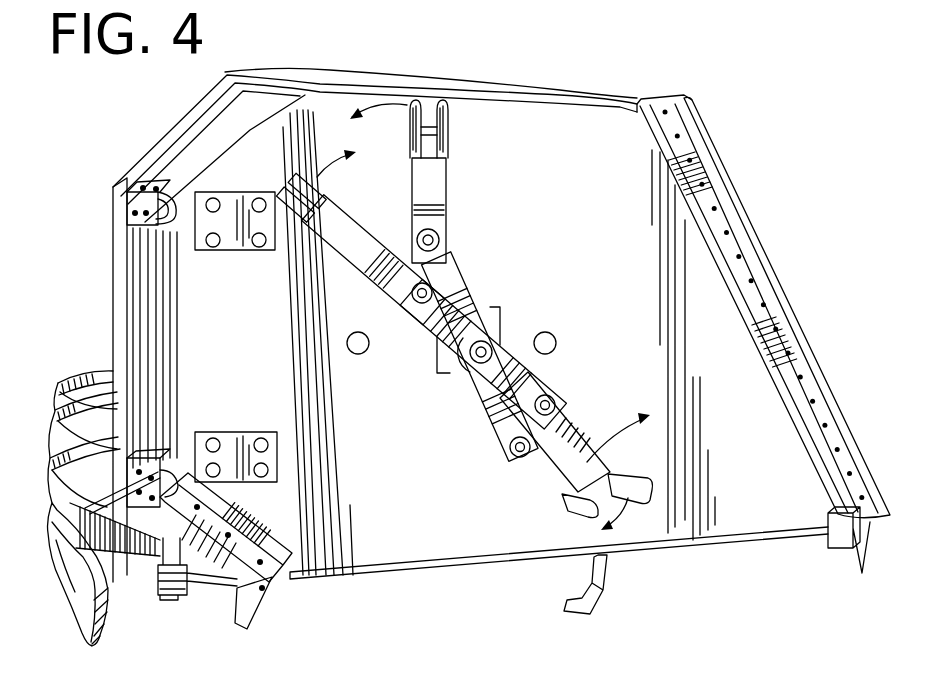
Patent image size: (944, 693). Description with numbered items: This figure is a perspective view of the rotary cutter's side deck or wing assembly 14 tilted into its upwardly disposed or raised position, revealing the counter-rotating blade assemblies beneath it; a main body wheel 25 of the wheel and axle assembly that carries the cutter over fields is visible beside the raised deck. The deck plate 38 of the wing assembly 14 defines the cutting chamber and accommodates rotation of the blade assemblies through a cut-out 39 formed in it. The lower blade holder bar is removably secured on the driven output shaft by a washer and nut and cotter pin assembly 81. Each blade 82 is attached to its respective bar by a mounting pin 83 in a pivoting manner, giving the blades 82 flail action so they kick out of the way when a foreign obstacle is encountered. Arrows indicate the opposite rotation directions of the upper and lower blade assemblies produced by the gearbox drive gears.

The side deck or wing assembly 14 is at (110, 262).
The main body wheel 25 is at (100, 378).
The deck plate 38 is at (419, 490).
The cut-out 39 is at (507, 338).
The nut and cotter pin assembly 81 is at (497, 341).
The blade 82 is at (347, 233).
The mounting pin 83 is at (440, 242).